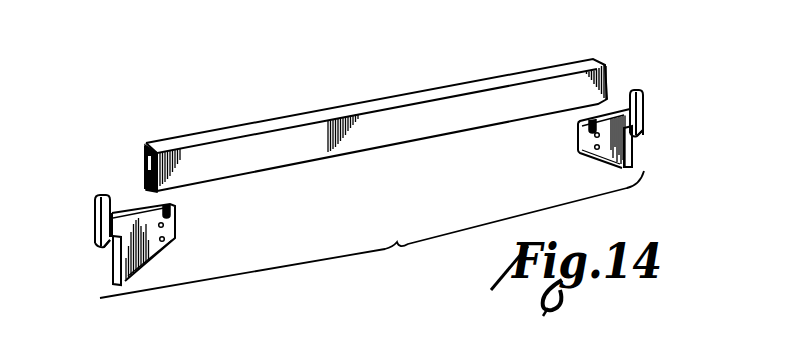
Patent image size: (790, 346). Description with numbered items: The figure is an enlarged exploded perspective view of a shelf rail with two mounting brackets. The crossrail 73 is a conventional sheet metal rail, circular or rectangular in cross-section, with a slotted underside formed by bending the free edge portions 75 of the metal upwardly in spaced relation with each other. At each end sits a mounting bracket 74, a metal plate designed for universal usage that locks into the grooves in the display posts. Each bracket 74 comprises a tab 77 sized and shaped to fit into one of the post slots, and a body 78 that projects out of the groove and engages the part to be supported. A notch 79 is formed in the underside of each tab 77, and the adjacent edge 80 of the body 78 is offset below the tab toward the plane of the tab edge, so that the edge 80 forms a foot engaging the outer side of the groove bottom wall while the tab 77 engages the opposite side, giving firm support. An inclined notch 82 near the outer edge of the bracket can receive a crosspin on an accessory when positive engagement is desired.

The crossrail 73 is at (209, 112).
The mounting bracket 74 is at (138, 291).
The free edge portion 75 is at (144, 184).
The tab 77 is at (95, 205).
The body 78 is at (157, 252).
The notch 79 is at (108, 246).
The edge 80 is at (113, 270).
The inclined notch 82 is at (170, 205).